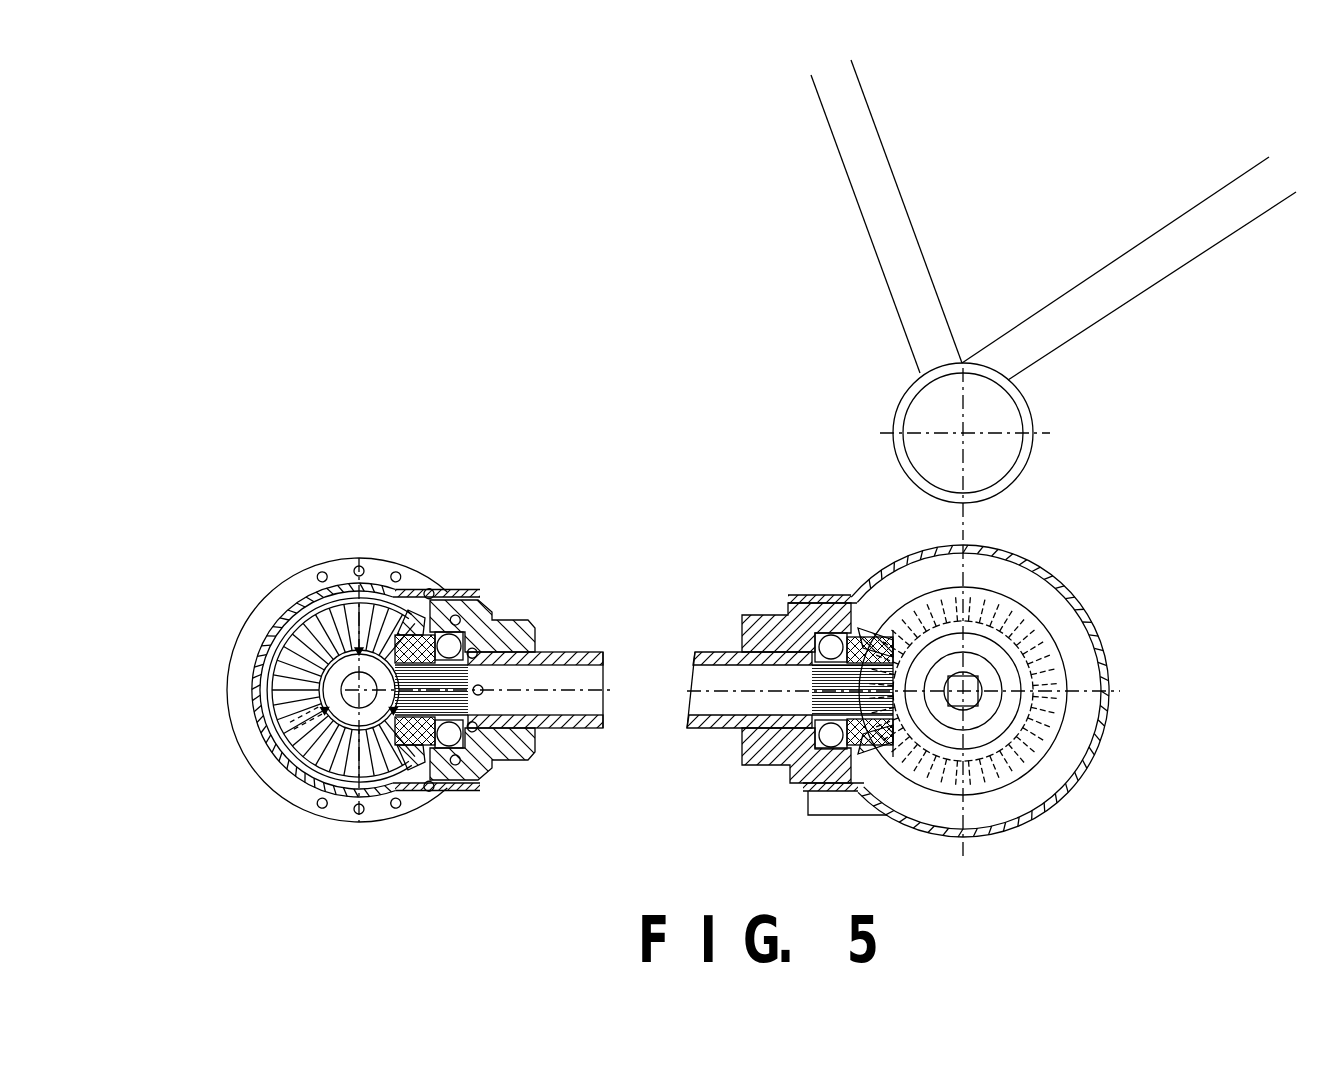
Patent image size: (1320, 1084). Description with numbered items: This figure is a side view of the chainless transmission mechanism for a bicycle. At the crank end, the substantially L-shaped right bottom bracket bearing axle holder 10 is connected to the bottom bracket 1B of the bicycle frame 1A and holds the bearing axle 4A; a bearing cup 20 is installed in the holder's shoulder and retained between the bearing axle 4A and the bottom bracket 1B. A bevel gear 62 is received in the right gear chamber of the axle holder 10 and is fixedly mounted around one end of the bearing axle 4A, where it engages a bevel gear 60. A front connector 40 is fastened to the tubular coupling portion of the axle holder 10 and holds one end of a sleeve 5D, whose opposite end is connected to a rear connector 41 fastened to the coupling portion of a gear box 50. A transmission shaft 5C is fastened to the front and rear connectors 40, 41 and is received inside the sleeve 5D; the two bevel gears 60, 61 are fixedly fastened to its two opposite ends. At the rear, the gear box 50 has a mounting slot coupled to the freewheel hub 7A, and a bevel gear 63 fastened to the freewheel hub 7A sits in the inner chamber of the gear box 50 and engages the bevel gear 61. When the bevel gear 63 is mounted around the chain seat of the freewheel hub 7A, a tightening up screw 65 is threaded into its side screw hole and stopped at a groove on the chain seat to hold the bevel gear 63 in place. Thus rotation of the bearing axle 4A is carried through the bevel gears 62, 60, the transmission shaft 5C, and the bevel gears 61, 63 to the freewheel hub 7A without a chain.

The bicycle frame 1A is at (1113, 312).
The bottom bracket 1B is at (1018, 460).
The freewheel hub 7A is at (355, 649).
The gear box 50 is at (366, 647).
The rear connector 41 is at (482, 653).
The sleeve 5D is at (499, 642).
The bevel gear 63 is at (292, 690).
The tightening up screw 65 is at (246, 727).
The bevel gear 61 is at (419, 741).
The transmission shaft 5C is at (790, 663).
The front connector 40 is at (814, 667).
The right bottom bracket bearing axle holder 10 is at (1007, 691).
The bearing axle 4A is at (1037, 691).
The bevel gear 60 is at (875, 746).
The bearing cup 20 is at (963, 733).
The bevel gear 62 is at (963, 736).